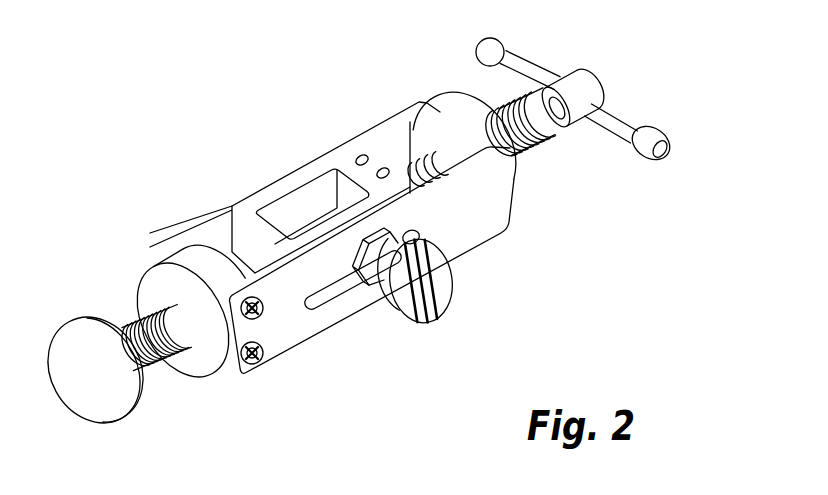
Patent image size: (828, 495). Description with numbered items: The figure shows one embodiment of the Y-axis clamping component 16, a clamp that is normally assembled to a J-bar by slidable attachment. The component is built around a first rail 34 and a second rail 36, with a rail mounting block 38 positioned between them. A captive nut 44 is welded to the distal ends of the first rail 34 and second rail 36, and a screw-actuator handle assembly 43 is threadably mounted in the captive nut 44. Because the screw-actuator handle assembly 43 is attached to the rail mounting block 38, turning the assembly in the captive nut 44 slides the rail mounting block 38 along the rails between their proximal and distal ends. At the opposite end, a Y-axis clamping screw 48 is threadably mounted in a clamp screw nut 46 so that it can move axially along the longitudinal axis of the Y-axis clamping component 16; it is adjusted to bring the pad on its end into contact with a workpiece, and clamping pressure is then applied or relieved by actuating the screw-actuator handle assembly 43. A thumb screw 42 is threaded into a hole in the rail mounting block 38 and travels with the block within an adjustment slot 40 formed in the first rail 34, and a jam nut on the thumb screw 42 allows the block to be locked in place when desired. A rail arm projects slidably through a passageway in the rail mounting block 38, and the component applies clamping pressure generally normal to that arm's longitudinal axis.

The Y-axis clamping component 16 is at (382, 247).
The first rail 34 is at (510, 232).
The second rail 36 is at (389, 117).
The rail mounting block 38 is at (308, 197).
The adjustment slot 40 is at (343, 280).
The thumb screw 42 is at (449, 302).
The screw-actuator handle assembly 43 is at (620, 121).
The captive nut 44 is at (464, 116).
The clamp screw nut 46 is at (207, 267).
The Y-axis clamping screw 48 is at (143, 353).